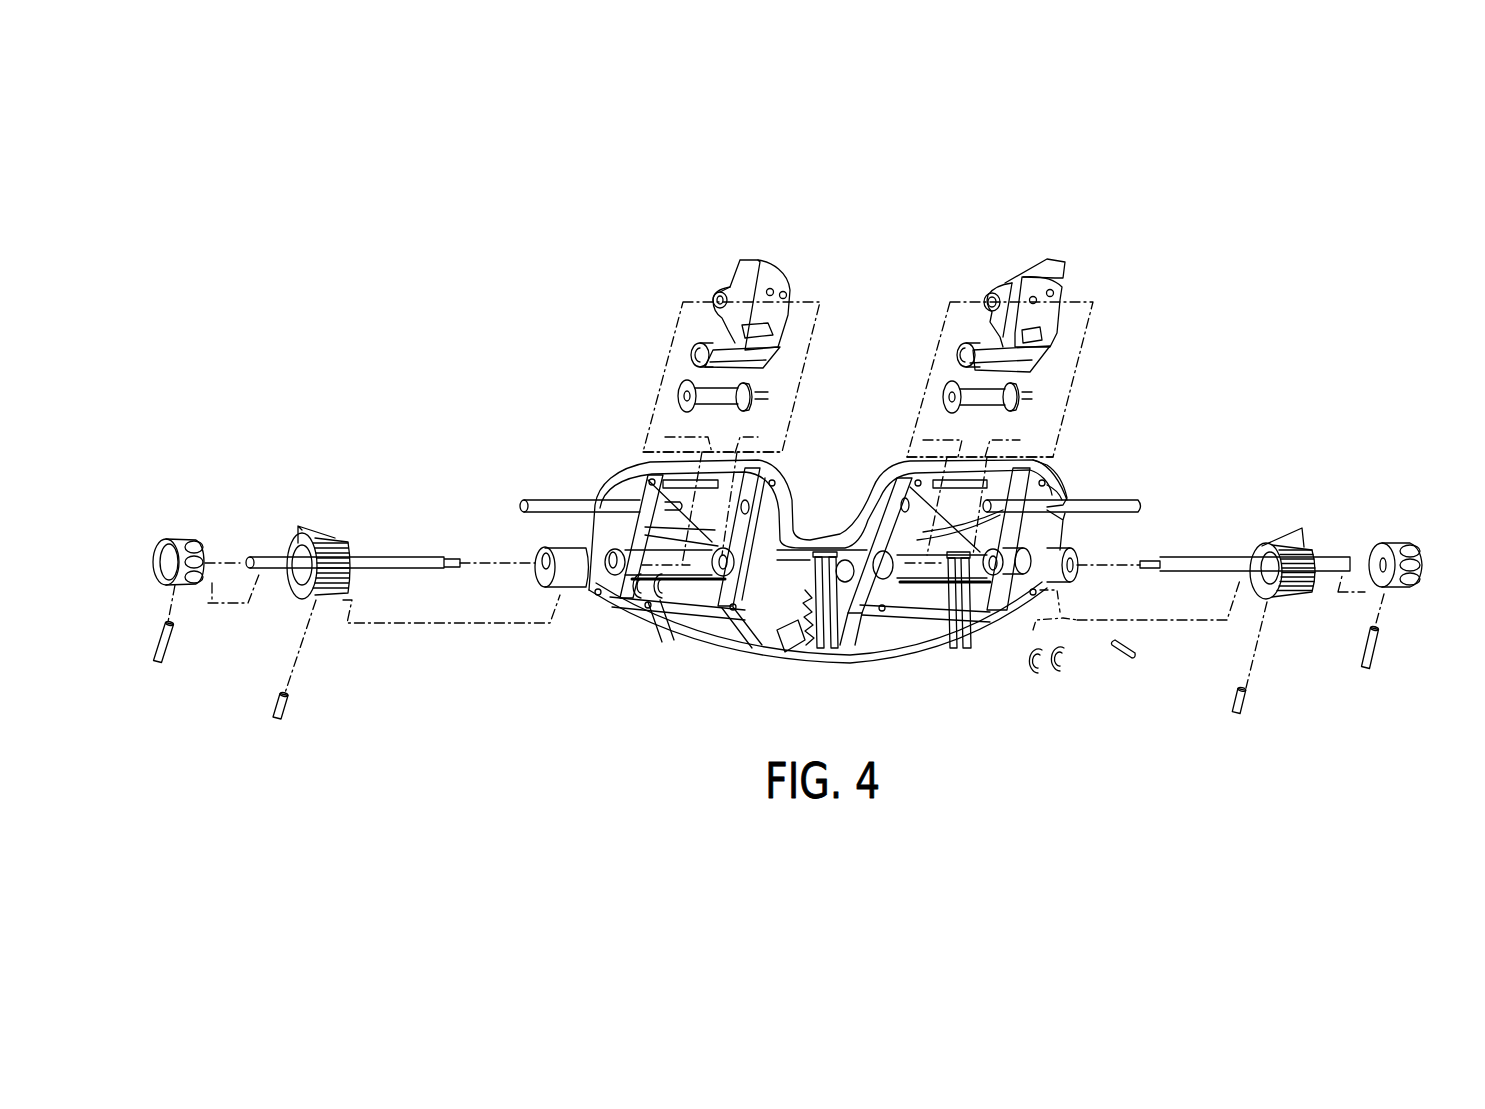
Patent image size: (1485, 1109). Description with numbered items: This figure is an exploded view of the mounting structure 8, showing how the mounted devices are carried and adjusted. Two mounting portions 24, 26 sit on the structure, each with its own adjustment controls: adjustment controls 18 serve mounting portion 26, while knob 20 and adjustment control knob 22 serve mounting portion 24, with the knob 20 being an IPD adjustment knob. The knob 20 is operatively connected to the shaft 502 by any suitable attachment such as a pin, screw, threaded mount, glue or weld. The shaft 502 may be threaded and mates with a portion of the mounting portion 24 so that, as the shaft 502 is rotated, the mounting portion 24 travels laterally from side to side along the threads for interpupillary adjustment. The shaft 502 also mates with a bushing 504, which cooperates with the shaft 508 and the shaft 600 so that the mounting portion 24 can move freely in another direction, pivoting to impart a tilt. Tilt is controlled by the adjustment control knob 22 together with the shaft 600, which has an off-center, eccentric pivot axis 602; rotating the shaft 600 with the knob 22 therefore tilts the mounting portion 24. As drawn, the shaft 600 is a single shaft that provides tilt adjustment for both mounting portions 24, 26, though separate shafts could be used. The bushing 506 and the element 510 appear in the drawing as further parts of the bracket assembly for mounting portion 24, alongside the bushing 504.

The mounting structure 8 is at (663, 653).
The adjustment controls 18 is at (220, 690).
The knob 20 is at (1423, 583).
The adjustment control knob 22 is at (1285, 603).
The mounting portion 24 is at (1060, 285).
The mounting portion 26 is at (790, 287).
The shaft 502 is at (1218, 551).
The bushing 504 is at (1030, 388).
The hinge boss 506 is at (963, 352).
The shaft 508 is at (1129, 494).
The mounting hole 510 is at (984, 301).
The shaft 600 is at (565, 594).
The pivot axis 602 is at (547, 553).